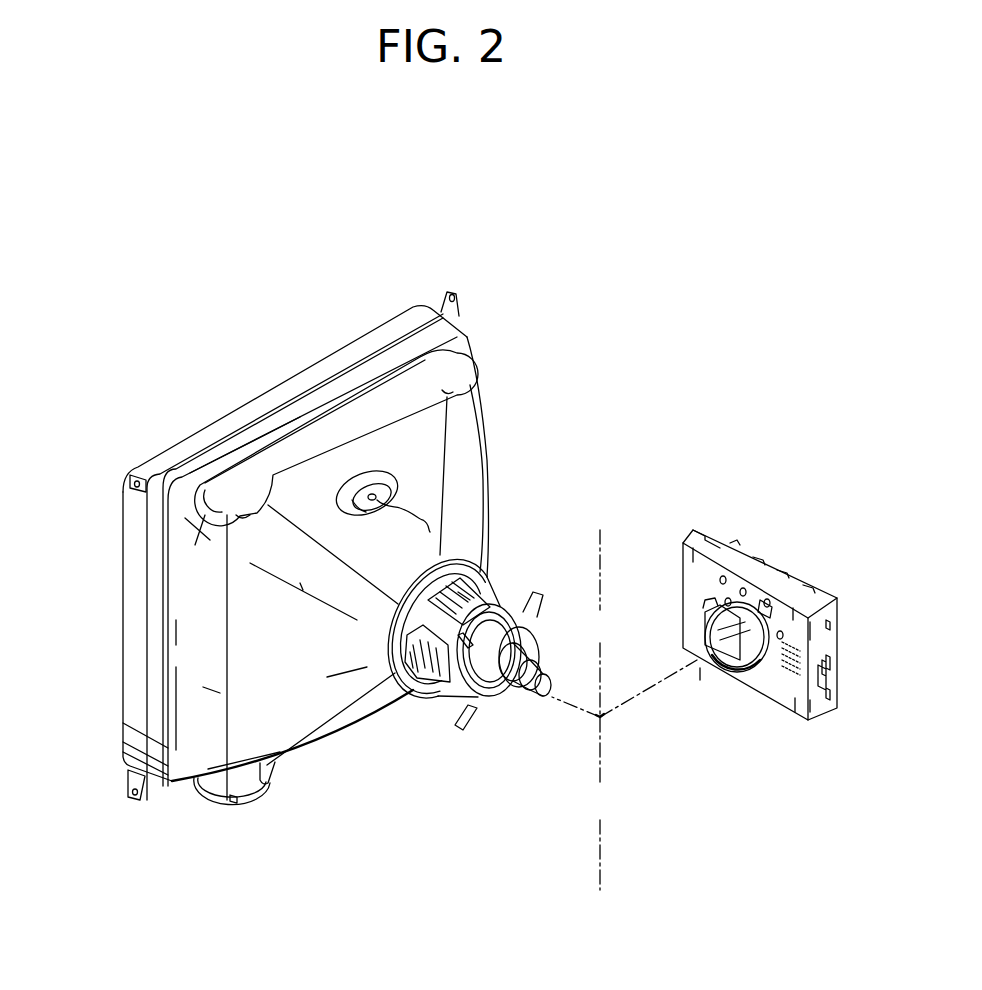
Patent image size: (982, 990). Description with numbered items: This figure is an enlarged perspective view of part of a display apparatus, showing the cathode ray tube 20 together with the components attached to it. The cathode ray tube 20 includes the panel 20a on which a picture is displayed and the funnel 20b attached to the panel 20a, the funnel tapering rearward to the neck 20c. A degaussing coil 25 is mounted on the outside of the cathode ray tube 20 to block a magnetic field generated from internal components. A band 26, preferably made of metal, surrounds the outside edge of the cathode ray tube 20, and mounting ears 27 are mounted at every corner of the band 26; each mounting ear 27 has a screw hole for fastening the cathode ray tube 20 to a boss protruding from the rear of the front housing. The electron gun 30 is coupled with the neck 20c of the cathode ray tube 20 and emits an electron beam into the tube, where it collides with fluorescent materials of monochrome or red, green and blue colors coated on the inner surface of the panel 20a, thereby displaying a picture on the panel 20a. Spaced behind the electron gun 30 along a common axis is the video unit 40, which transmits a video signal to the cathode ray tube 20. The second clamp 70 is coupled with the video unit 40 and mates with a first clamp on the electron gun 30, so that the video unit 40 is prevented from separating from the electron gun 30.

The cathode ray tube 20 is at (517, 307).
The panel 20a is at (200, 428).
The funnel 20b is at (462, 458).
The neck 20c is at (518, 640).
The degaussing coil 25 is at (482, 372).
The band 26 is at (397, 353).
The mounting ear 27 is at (448, 292).
The electron gun 30 is at (546, 706).
The video unit 40 is at (779, 553).
The second clamp 70 is at (744, 682).